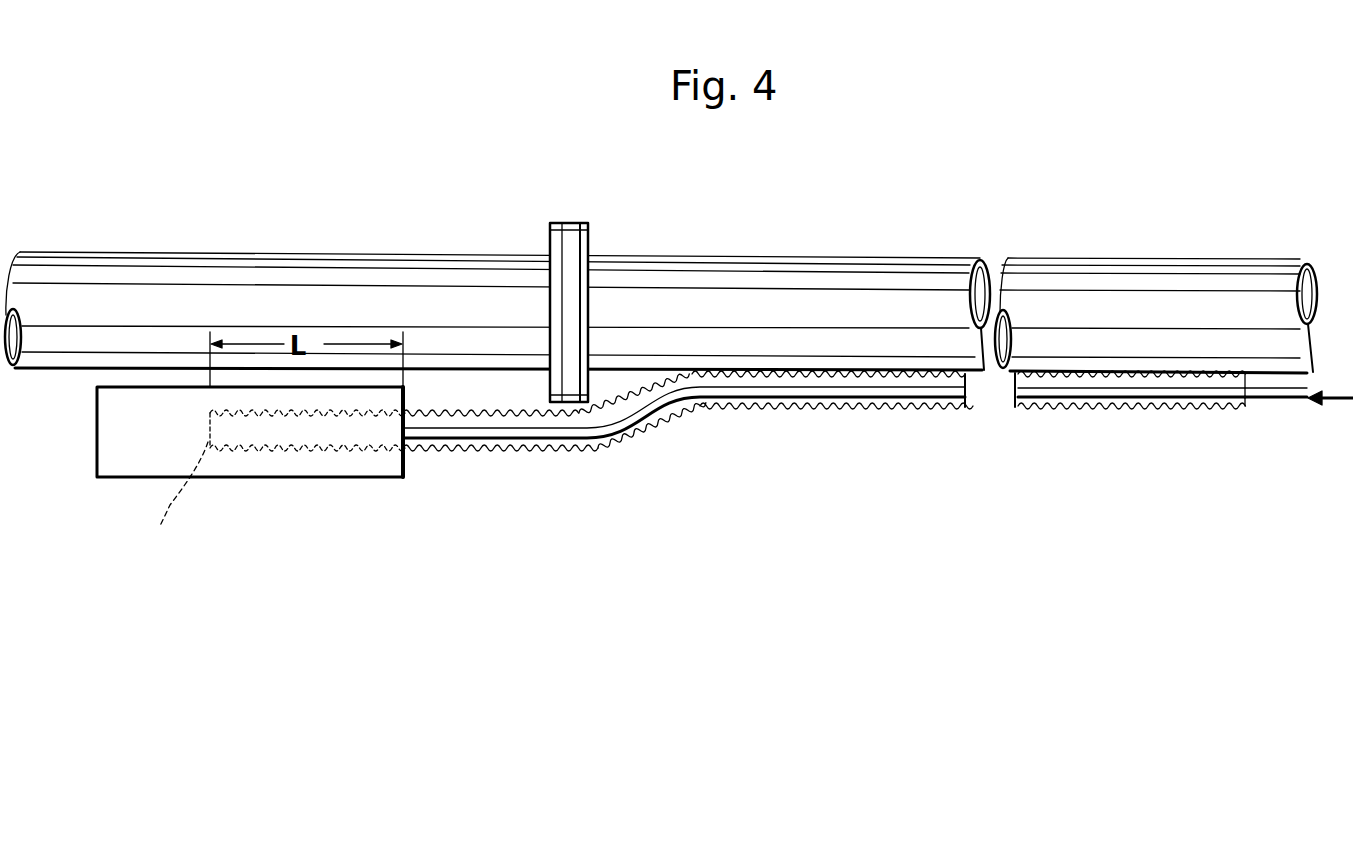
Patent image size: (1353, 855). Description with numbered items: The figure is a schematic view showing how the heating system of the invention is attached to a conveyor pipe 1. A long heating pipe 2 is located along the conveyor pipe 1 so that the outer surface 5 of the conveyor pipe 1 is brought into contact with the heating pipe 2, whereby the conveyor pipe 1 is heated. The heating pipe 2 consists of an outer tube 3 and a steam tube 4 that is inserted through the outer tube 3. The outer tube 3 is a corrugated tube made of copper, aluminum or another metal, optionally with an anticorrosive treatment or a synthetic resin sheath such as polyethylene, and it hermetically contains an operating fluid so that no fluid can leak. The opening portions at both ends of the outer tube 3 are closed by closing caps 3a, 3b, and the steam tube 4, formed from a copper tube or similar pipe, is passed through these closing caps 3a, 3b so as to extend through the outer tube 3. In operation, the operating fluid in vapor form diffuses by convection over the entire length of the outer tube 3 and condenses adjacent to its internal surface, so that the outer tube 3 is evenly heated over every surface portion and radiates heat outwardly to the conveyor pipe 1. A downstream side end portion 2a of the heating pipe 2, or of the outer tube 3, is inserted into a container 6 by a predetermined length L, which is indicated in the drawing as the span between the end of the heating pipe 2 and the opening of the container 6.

The conveyor pipe 1 is at (793, 258).
The heating pipe 2 is at (815, 409).
The downstream side end portion of the heating pipe 2a is at (265, 450).
The outer tube 3 is at (722, 408).
The closing cap 3a is at (170, 504).
The closing cap 3b is at (1256, 412).
The steam tube 4 is at (708, 376).
The outer surface of the conveyor pipe 5 is at (868, 283).
The container 6 is at (303, 478).